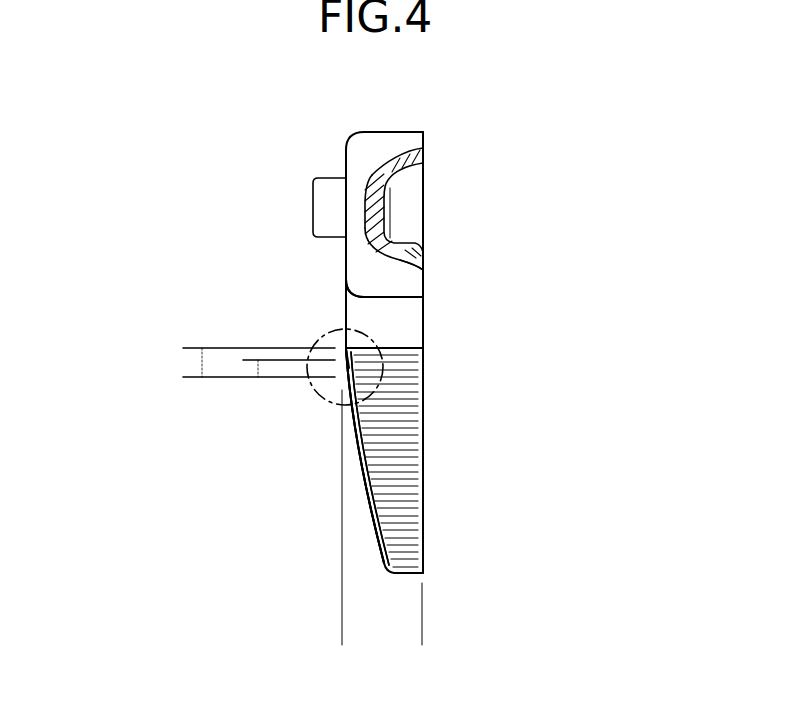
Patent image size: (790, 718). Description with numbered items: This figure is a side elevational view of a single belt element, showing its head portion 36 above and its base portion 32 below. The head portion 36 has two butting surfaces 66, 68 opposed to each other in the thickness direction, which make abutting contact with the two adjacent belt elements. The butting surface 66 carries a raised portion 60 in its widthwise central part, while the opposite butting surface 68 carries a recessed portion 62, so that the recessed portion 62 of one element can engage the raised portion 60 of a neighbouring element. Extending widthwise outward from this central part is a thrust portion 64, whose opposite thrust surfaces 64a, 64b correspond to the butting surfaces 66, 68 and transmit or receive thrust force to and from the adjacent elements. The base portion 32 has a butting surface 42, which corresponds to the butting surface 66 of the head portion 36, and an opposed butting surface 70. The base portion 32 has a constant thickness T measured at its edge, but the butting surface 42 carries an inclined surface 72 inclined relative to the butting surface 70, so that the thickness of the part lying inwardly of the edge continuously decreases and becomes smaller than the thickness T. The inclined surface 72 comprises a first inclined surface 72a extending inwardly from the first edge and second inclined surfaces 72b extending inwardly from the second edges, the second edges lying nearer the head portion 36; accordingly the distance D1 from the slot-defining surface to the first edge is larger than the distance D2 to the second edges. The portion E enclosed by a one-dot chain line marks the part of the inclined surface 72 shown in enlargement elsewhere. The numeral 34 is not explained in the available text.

The base portion 32 is at (483, 507).
The main body portion 34 is at (437, 323).
The head portion 36 is at (482, 177).
The butting surface 42 is at (335, 365).
The raised portion 60 is at (318, 198).
The recessed portion 62 is at (423, 195).
The thrust portion 64 is at (381, 151).
The thrust surface 64a is at (345, 158).
The thrust surface 64b is at (423, 138).
The butting surface 66 is at (340, 268).
The butting surface 68 is at (428, 268).
The butting surface 70 is at (428, 405).
The inclined surface 72 is at (367, 520).
The first inclined surface 72a is at (360, 444).
The second inclined surface 72b is at (370, 490).
The portion E is at (333, 330).
The distance D1 is at (202, 390).
The distance D2 is at (258, 390).
The thickness T is at (422, 627).